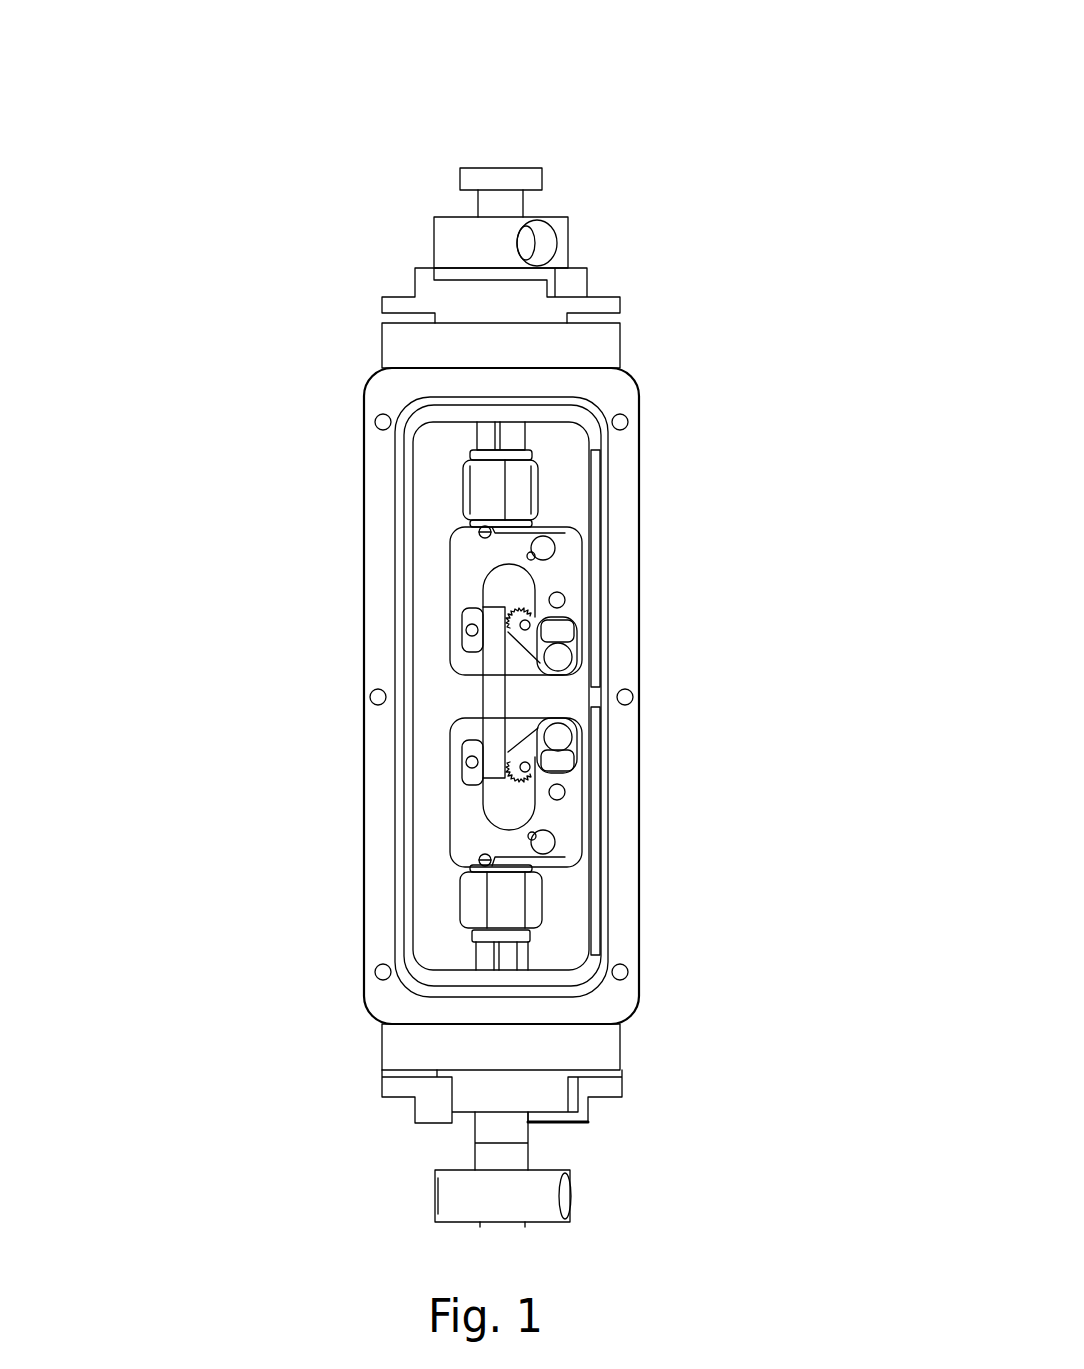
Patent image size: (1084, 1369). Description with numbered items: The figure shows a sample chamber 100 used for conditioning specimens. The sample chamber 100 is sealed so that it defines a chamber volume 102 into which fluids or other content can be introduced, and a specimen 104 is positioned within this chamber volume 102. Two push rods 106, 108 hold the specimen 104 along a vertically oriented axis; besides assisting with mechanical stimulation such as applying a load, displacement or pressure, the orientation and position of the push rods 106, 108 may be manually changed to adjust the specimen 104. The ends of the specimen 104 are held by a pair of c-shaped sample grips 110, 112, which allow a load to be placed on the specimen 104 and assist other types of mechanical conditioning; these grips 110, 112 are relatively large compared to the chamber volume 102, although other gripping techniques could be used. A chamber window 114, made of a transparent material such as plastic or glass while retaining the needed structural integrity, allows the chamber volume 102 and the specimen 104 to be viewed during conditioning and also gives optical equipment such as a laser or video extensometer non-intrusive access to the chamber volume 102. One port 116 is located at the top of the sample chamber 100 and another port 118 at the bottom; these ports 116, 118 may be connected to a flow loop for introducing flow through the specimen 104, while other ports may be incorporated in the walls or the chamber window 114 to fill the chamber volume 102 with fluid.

The sample chamber 100 is at (850, 43).
The chamber volume 102 is at (420, 888).
The specimen 104 is at (505, 692).
The push rod 106 is at (553, 469).
The push rod 108 is at (555, 928).
The sample grip 110 is at (590, 587).
The sample grip 112 is at (590, 861).
The chamber window 114 is at (405, 745).
The port 116 is at (556, 248).
The port 118 is at (582, 1196).